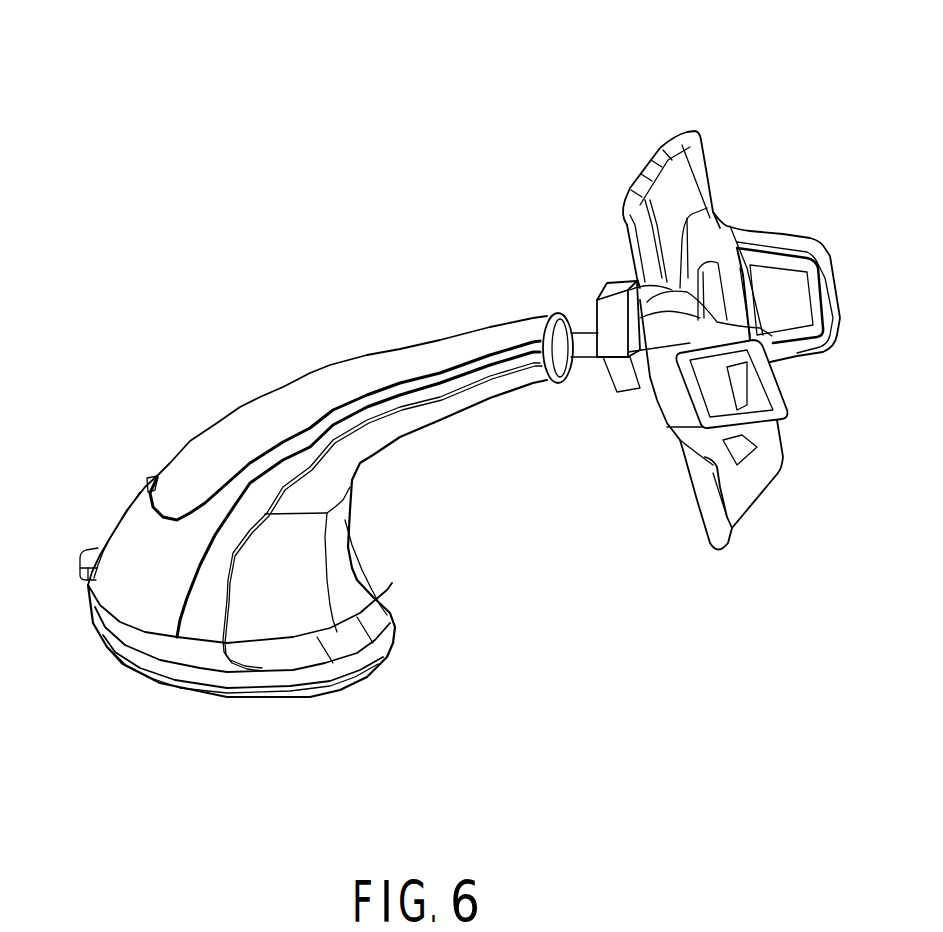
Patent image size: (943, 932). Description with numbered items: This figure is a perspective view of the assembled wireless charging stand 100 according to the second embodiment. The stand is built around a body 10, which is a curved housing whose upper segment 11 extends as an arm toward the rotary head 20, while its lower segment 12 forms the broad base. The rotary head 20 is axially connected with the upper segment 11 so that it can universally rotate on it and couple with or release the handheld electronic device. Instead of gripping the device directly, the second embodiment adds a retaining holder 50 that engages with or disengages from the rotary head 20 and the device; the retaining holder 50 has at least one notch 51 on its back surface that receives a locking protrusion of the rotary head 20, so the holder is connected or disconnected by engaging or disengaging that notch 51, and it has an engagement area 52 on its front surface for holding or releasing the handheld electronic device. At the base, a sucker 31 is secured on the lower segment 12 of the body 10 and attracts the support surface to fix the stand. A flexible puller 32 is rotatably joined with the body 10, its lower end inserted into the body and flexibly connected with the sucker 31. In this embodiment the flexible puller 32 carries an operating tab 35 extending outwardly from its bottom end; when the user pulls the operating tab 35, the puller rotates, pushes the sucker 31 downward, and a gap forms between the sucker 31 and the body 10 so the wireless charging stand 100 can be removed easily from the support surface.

The wireless charging stand 100 is at (104, 44).
The body 10 is at (237, 393).
The upper segment 11 is at (487, 345).
The lower segment 12 is at (138, 595).
The rotary head 20 is at (607, 320).
The sucker 31 is at (193, 680).
The flexible puller 32 is at (132, 503).
The operating tab 35 is at (88, 556).
The retaining holder 50 is at (778, 228).
The notch 51 is at (648, 342).
The engagement area 52 is at (703, 245).